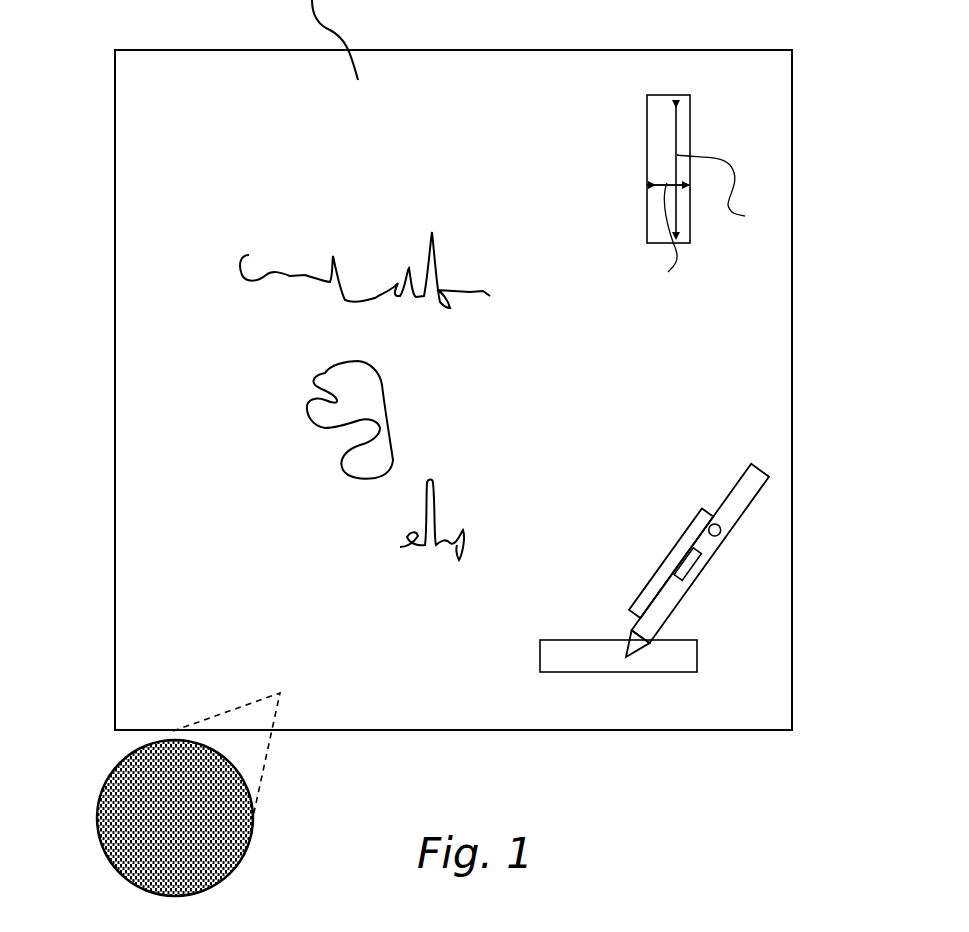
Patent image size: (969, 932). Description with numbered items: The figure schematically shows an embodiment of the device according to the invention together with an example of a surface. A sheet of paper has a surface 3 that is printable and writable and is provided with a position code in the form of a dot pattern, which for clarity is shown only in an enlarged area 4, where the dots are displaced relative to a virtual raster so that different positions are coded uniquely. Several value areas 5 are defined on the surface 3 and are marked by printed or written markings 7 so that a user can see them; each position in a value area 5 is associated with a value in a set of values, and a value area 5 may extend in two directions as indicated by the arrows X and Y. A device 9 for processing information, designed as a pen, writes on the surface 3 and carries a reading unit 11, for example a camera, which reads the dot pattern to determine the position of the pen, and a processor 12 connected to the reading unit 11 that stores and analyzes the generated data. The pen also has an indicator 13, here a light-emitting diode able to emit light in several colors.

The surface 3 is at (200, 228).
The enlarged area 4 is at (248, 827).
The value area 5 is at (660, 140).
The markings 7 is at (690, 112).
The device for processing of information 9 is at (731, 535).
The reading unit 11 is at (665, 563).
The processor 12 is at (698, 571).
The indicator 13 is at (724, 543).